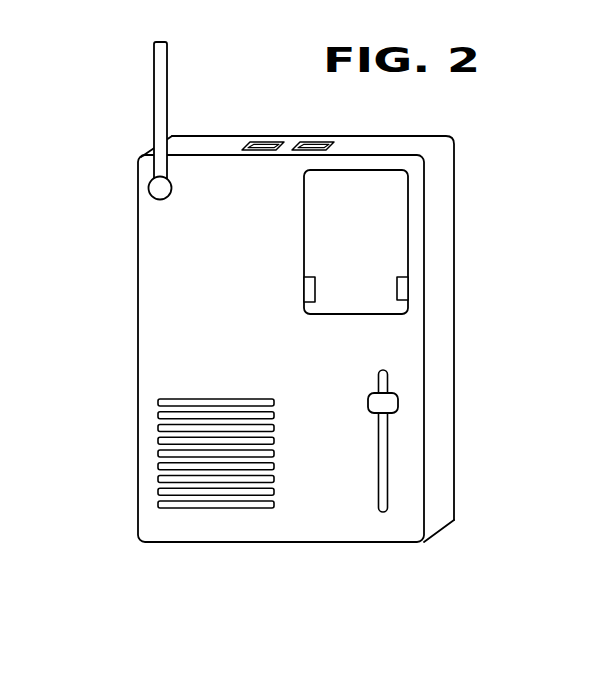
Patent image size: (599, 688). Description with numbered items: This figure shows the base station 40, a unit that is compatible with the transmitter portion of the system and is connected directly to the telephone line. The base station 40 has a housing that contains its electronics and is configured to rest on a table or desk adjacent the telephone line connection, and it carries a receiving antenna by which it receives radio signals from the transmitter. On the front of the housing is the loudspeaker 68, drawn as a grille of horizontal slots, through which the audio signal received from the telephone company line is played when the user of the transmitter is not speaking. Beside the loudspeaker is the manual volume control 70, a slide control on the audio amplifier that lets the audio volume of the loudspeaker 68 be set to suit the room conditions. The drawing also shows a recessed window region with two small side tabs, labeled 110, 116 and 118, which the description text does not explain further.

The base station 40 is at (137, 316).
The loudspeaker 68 is at (188, 448).
The display window 110 is at (406, 220).
The left latch tab 116 is at (316, 289).
The right latch tab 118 is at (399, 287).
The manual volume control 70 is at (392, 405).